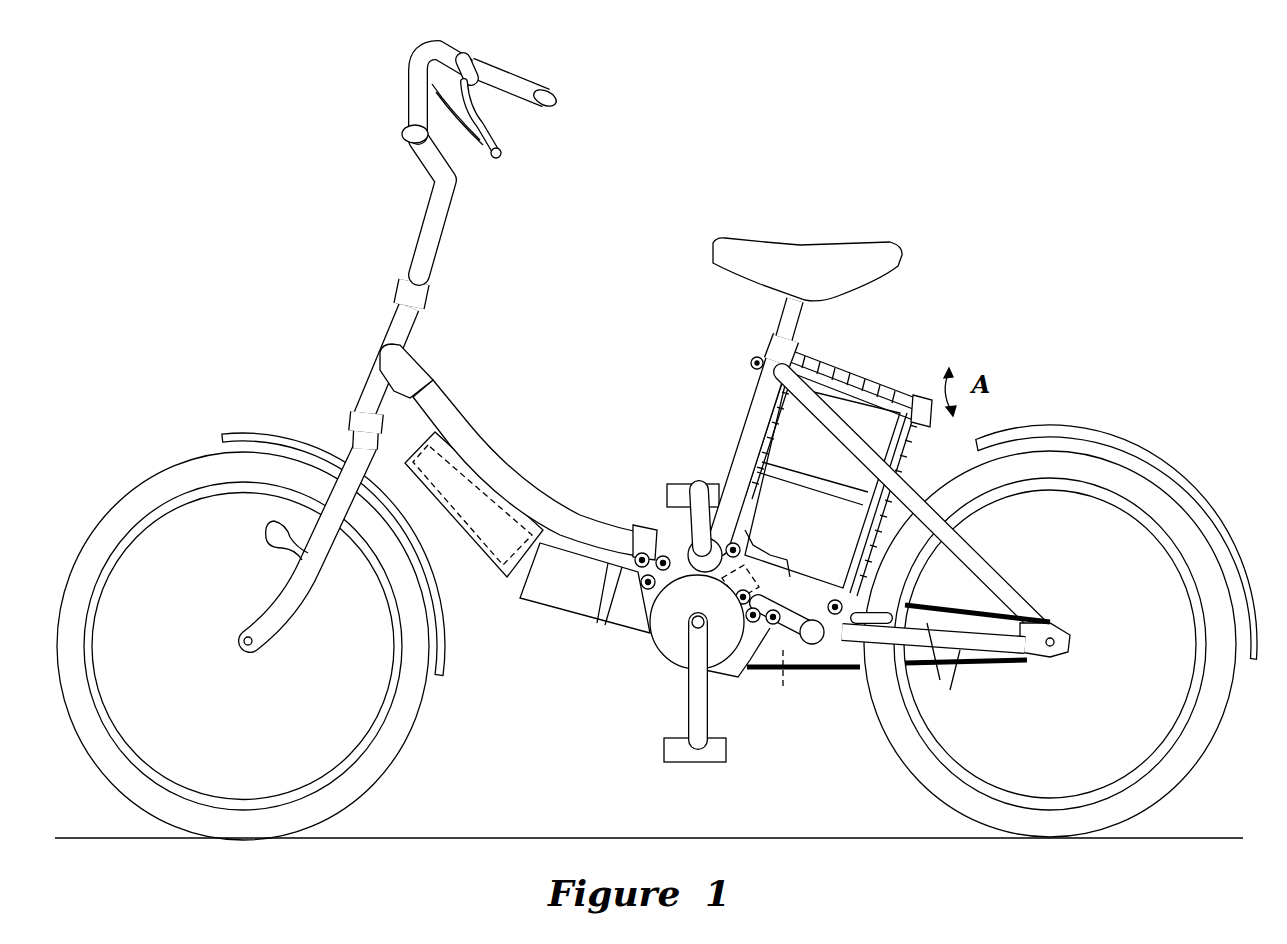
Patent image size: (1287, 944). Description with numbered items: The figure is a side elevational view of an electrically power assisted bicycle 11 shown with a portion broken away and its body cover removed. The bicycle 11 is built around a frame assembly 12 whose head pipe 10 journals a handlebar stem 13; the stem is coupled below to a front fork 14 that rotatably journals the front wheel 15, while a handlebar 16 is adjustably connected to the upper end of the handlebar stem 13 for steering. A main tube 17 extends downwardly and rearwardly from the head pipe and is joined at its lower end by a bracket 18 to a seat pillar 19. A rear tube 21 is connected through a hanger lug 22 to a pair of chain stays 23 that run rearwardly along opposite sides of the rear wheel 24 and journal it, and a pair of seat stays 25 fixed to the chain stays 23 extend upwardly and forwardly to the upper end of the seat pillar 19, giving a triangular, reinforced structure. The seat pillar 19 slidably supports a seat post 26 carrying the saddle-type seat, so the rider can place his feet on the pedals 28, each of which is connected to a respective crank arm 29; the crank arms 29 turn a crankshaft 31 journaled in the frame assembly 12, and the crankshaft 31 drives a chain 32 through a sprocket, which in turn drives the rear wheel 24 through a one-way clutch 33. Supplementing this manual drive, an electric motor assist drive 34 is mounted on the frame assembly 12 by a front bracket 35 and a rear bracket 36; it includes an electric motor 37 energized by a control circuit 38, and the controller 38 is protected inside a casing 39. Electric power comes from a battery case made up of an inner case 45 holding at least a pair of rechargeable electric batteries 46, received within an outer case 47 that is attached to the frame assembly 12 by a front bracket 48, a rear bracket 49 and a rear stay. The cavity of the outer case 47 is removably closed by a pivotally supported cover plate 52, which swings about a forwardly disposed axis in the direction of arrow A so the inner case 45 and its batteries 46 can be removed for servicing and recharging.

The head pipe 10 is at (460, 217).
The electrically power assisted bicycle 11 is at (1012, 236).
The frame assembly 12 is at (360, 391).
The handlebar stem 13 is at (397, 322).
The front fork 14 is at (293, 607).
The front wheel 15 is at (178, 470).
The handlebar 16 is at (415, 55).
The main tube 17 is at (553, 513).
The bracket 18 is at (640, 526).
The seat pillar 19 is at (762, 393).
The rear tube 21 is at (749, 673).
The hanger lug 22 is at (812, 645).
The chain stays 23 is at (983, 643).
The rear wheel 24 is at (1130, 482).
The seat stays 25 is at (1007, 543).
The seat post 26 is at (805, 325).
The pedals 28 is at (816, 235).
The crank arm 29 is at (650, 540).
The crankshaft 31 is at (695, 624).
The chain 32 is at (843, 670).
The one-way clutch 33 is at (1060, 670).
The electric motor assist drive 34 is at (652, 648).
The front bracket 35 is at (627, 585).
The rear bracket 36 is at (761, 637).
The electric motor 37 is at (577, 618).
The control circuit 38 is at (478, 528).
The casing 39 is at (505, 573).
The inner case 45 is at (870, 543).
The rechargeable electric batteries 46 is at (790, 430).
The outer case 47 is at (890, 510).
The front bracket 48 is at (763, 560).
The rear bracket 49 is at (907, 647).
The cover plate 52 is at (853, 373).